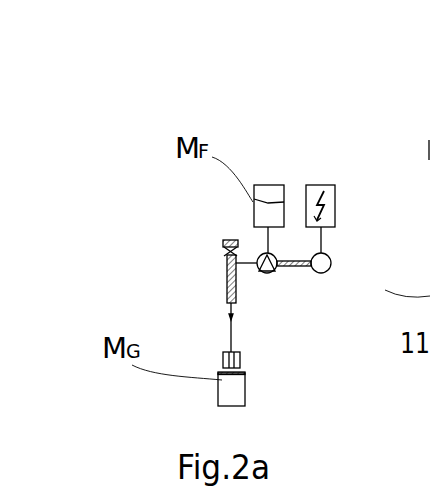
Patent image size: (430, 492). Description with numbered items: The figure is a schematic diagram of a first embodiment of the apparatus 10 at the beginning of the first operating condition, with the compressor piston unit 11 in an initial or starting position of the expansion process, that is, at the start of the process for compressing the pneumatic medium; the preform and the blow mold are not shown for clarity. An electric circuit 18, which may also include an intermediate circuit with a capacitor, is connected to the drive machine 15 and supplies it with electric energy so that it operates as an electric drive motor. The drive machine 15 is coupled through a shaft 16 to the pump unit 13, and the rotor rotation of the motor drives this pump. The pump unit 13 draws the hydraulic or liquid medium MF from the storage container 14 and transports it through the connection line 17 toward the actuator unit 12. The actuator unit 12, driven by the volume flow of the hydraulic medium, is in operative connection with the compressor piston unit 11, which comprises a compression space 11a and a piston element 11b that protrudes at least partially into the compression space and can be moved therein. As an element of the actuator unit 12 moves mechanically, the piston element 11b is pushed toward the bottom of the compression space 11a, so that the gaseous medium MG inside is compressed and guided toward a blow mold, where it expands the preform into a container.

The apparatus 10 is at (371, 155).
The compressor piston unit 11 is at (220, 397).
The compression space 11a is at (245, 397).
The piston element 11b is at (222, 372).
The actuator unit 12 is at (228, 284).
The pump unit 13 is at (270, 274).
The storage container 14 is at (268, 185).
The drive machine 15 is at (320, 276).
The shaft 16 is at (301, 261).
The connection line 17 is at (250, 258).
The electric circuit 18 is at (323, 185).